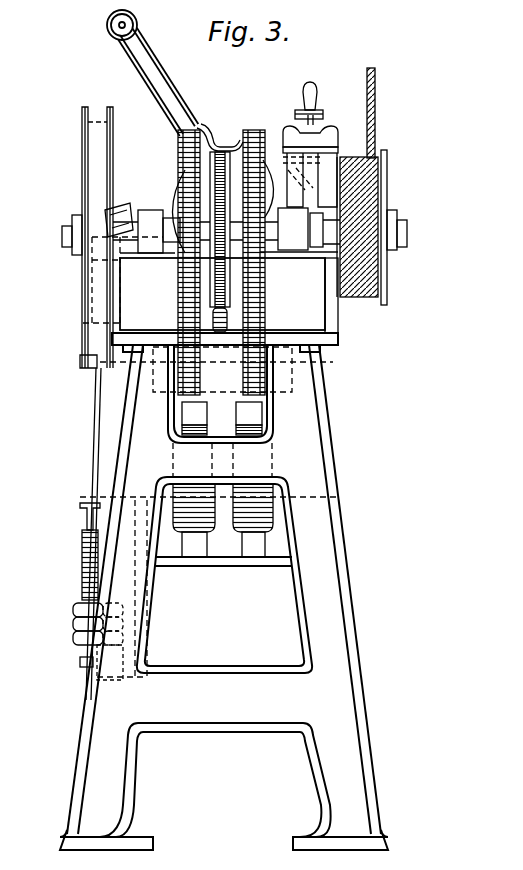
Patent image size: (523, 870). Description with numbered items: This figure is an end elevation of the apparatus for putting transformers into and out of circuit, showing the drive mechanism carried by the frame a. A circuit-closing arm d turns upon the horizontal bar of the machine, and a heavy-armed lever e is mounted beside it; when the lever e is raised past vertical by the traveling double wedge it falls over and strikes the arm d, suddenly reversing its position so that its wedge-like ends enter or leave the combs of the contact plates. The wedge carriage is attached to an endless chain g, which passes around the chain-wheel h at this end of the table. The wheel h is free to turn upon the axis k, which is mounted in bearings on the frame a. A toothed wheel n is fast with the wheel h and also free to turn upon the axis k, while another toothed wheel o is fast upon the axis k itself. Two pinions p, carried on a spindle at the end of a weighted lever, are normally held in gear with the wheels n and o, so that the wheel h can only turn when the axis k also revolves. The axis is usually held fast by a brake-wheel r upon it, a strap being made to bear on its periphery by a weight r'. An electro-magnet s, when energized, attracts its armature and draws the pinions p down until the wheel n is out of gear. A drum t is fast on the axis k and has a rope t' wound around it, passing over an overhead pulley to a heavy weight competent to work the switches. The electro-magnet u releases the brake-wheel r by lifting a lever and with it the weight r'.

The frame a is at (224, 543).
The heavy-armed lever e is at (152, 73).
The toothed wheel o is at (198, 138).
The chain-wheel h is at (226, 153).
The toothed wheel n is at (257, 253).
The circuit-closing arm d is at (170, 208).
The endless chain g is at (265, 305).
The pinion p is at (222, 399).
The electro-magnet s is at (223, 520).
The brake-wheel r is at (87, 403).
The weight r' is at (89, 641).
The electro-magnet u is at (81, 551).
The drum t is at (362, 235).
The rope t' is at (380, 113).
The axis k is at (404, 230).